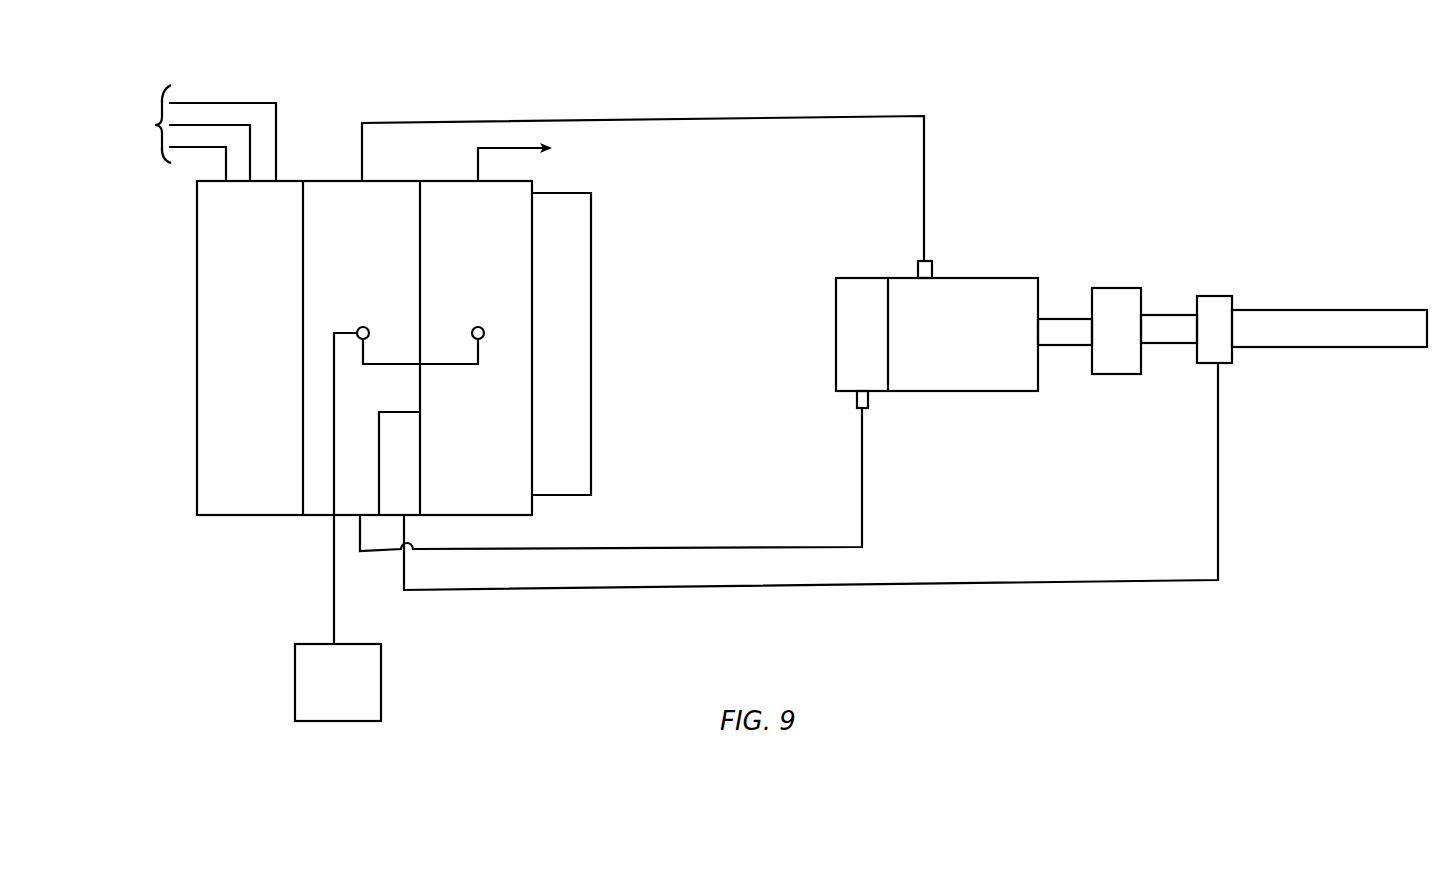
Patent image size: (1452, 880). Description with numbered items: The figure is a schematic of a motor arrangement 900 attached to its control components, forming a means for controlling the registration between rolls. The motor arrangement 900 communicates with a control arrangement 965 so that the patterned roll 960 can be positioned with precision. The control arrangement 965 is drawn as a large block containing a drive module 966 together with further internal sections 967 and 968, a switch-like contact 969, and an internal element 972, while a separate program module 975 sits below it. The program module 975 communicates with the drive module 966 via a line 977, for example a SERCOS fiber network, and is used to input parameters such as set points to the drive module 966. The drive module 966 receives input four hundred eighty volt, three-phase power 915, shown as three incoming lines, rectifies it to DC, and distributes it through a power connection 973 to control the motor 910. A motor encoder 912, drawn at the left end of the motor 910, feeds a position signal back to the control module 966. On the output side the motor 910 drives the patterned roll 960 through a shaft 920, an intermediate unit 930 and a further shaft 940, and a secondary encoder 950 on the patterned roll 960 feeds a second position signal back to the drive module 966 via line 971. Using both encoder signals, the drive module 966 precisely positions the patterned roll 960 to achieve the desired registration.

The motor arrangement 900 is at (1190, 206).
The motor 910 is at (992, 278).
The motor encoder 912 is at (836, 340).
The 480 volt, 3-phase power 915 is at (190, 133).
The shaft 920 is at (1065, 319).
The gearbox 930 is at (1115, 288).
The shaft 940 is at (1170, 343).
The secondary encoder 950 is at (1215, 296).
The patterned roll 960 is at (1325, 310).
The control arrangement 965 is at (160, 515).
The drive module 966 is at (363, 327).
The controller module 967 is at (320, 178).
The controller module 968 is at (495, 238).
The switch contact 969 is at (478, 327).
The line 971 is at (410, 464).
The motor control line 972 is at (863, 500).
The power connection 973 is at (753, 117).
The program module 975 is at (295, 690).
The line 977 is at (334, 578).